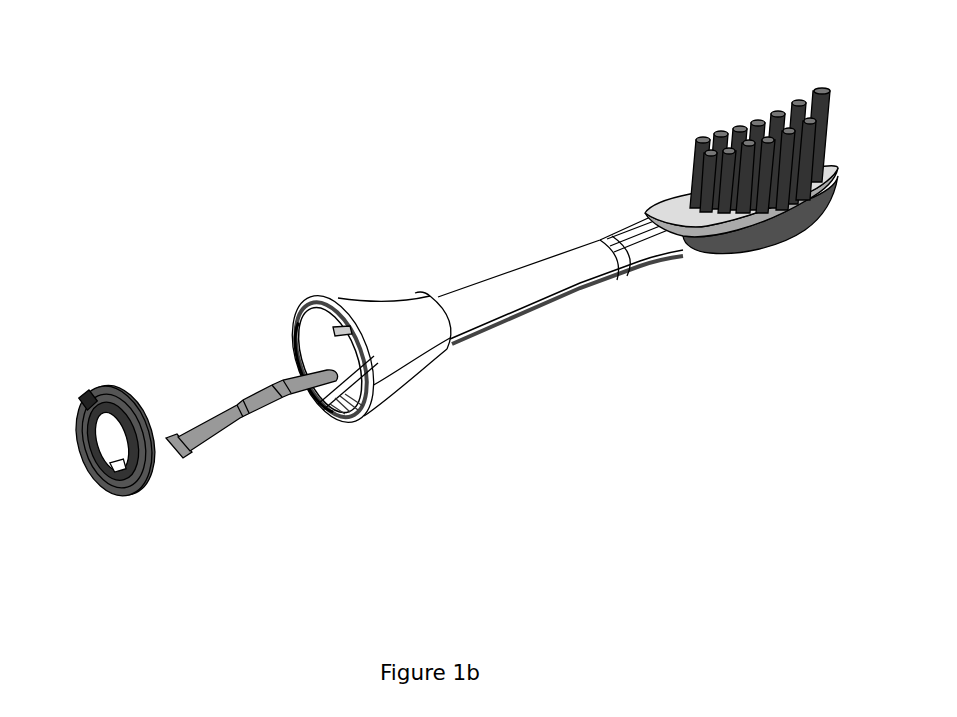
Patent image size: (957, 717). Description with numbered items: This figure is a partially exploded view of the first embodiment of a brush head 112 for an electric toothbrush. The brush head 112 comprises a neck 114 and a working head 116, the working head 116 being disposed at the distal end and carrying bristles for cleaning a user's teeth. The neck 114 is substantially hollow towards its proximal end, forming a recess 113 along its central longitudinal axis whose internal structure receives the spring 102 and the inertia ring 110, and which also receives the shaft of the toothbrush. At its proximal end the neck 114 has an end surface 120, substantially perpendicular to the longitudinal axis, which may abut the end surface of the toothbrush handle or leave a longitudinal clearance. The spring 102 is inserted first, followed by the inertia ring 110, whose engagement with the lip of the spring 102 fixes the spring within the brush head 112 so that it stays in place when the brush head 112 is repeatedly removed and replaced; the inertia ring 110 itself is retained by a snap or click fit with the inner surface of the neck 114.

The spring 102 is at (237, 433).
The inertia ring 110 is at (128, 497).
The brush head 112 is at (485, 156).
The recess 113 is at (318, 352).
The neck 114 is at (549, 302).
The working head 116 is at (777, 212).
The end surface 120 is at (302, 310).